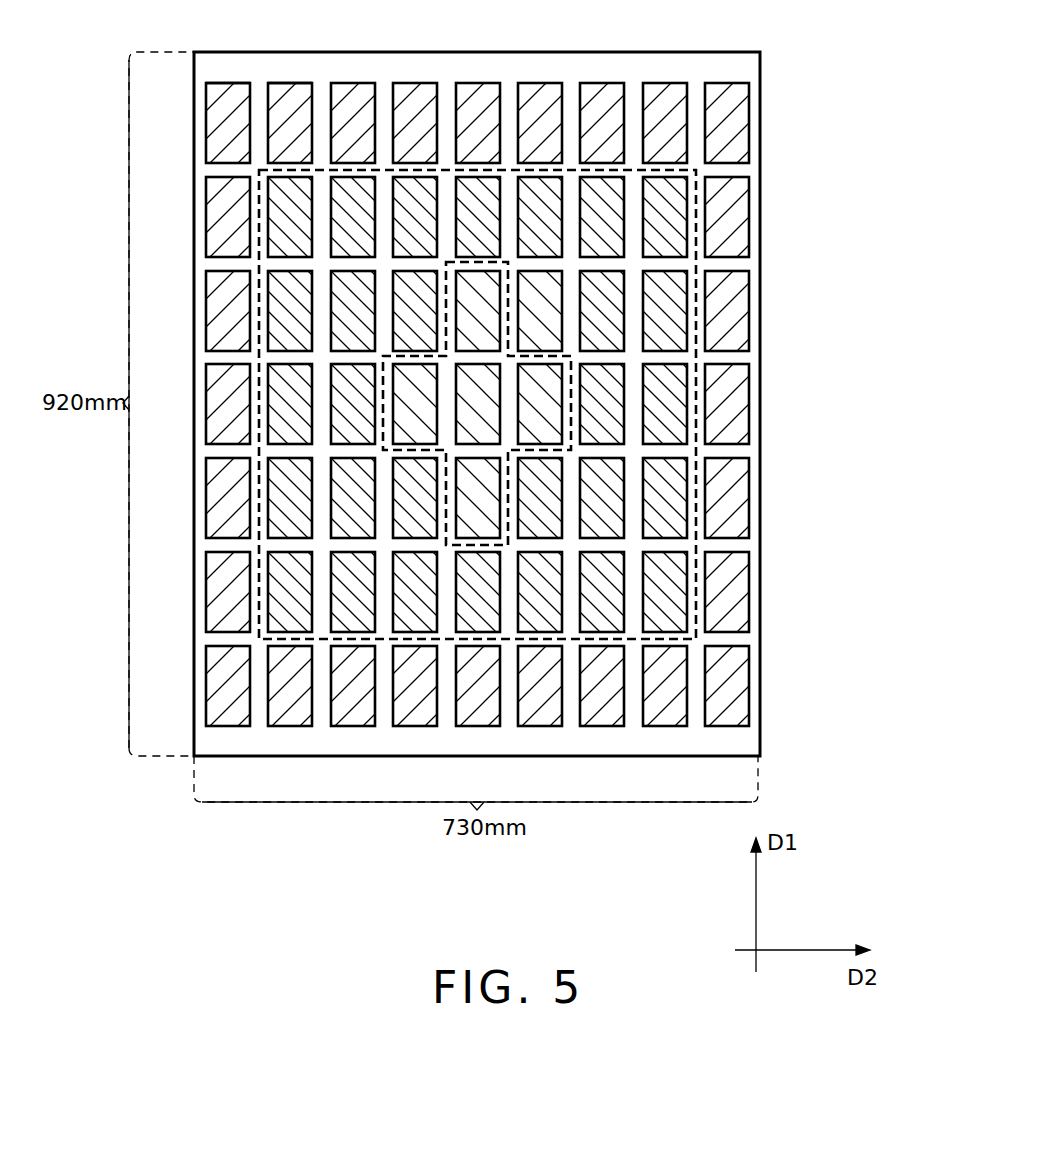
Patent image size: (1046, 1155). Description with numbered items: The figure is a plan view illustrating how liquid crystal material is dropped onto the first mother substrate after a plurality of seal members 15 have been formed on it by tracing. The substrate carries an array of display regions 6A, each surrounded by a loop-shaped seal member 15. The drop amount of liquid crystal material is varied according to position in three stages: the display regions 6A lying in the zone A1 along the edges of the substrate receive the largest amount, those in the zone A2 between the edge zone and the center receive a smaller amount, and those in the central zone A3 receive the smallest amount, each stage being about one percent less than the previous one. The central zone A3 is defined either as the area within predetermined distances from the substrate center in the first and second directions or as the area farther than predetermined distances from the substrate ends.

The seal member 15 is at (224, 83).
The display region 6A is at (222, 102).
The zone along the edges A1 is at (635, 77).
The intermediate zone A2 is at (568, 187).
The central zone A3 is at (508, 262).